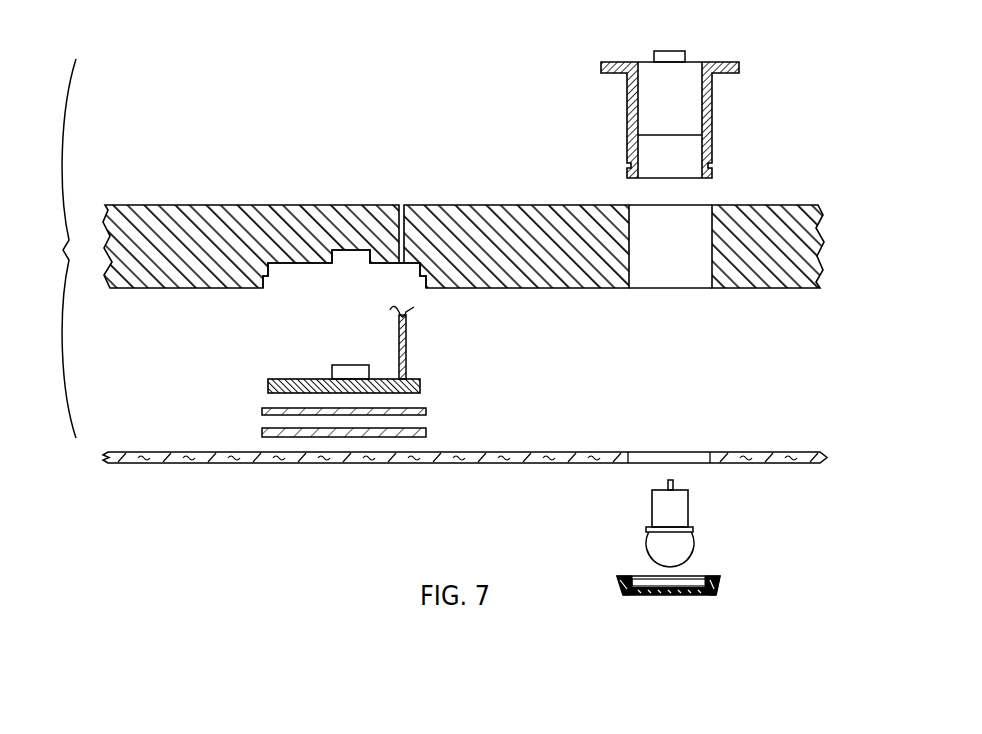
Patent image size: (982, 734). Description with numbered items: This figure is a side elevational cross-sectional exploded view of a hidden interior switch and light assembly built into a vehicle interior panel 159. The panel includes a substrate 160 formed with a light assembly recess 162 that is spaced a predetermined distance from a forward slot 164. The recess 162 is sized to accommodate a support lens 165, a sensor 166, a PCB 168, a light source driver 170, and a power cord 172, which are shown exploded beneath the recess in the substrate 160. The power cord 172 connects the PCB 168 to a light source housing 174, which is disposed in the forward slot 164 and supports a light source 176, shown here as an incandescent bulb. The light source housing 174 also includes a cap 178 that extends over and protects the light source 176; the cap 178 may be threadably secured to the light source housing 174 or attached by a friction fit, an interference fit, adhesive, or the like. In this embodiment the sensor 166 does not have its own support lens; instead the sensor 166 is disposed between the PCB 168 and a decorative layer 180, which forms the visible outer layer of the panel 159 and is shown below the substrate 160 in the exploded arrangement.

The vehicle interior panel 159 is at (59, 248).
The substrate 160 is at (775, 205).
The light assembly recess 162 is at (302, 278).
The forward slot 164 is at (689, 256).
The support lens 165 is at (265, 432).
The sensor 166 is at (415, 407).
The PCB 168 is at (285, 379).
The light source driver 170 is at (347, 365).
The power cord 172 is at (405, 357).
The light source housing 174 is at (722, 62).
The light source 176 is at (692, 502).
The cap 178 is at (720, 582).
The decorative layer 180 is at (803, 452).